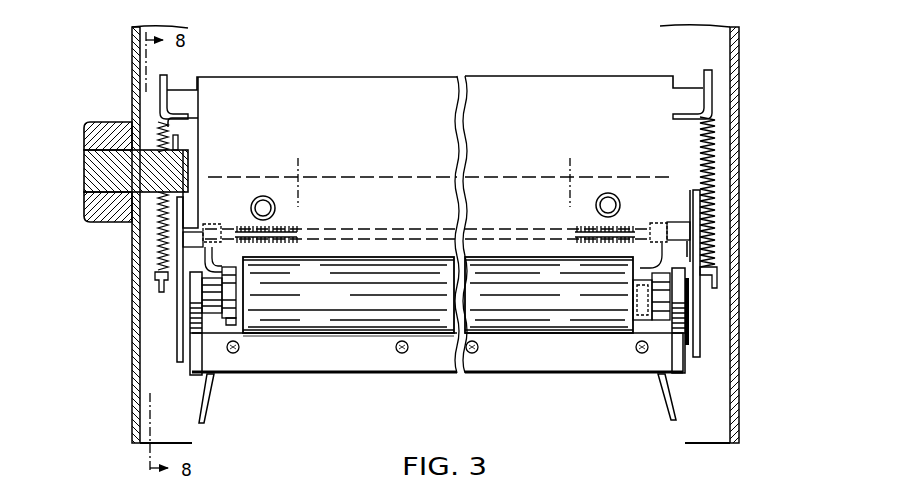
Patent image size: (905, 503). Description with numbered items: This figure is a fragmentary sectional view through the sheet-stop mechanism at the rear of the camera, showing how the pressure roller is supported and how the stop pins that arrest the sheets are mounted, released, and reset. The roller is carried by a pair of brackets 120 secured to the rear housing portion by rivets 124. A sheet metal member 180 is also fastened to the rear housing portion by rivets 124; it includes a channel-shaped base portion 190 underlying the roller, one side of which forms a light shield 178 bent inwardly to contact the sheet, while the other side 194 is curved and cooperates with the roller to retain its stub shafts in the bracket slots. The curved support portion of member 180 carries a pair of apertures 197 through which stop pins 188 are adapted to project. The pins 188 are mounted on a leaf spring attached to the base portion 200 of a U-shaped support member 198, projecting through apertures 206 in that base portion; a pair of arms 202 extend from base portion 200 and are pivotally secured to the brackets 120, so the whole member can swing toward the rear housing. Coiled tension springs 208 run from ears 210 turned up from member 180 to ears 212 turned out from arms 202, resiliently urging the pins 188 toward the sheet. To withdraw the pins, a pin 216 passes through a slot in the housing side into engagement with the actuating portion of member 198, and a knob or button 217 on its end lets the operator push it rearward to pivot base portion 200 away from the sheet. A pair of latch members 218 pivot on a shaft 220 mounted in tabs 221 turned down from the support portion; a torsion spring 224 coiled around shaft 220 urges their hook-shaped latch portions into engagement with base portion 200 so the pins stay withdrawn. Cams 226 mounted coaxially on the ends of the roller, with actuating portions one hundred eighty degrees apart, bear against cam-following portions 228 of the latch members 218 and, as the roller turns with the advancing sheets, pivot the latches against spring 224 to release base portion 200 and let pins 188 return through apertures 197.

The bracket 120 is at (210, 358).
The rivet 124 is at (478, 350).
The light shield 178 is at (416, 372).
The sheet metal member 180 is at (414, 73).
The stop pin 188 is at (275, 209).
The channel-shaped base portion 190 is at (385, 355).
The side 194 is at (502, 250).
The aperture 197 is at (264, 196).
The U-shaped support member 198 is at (172, 337).
The base portion 200 is at (192, 205).
The arm 202 is at (175, 297).
The aperture 206 is at (275, 203).
The coiled tension spring 208 is at (162, 247).
The ear 210 is at (166, 80).
The ear 212 is at (155, 282).
The pin 216 is at (84, 176).
The knob or button 217 is at (92, 128).
The latch member 218 is at (207, 222).
The shaft 220 is at (395, 232).
The tab 221 is at (218, 230).
The torsion spring 224 is at (305, 200).
The cam 226 is at (238, 282).
The cam-following portion 228 is at (238, 312).